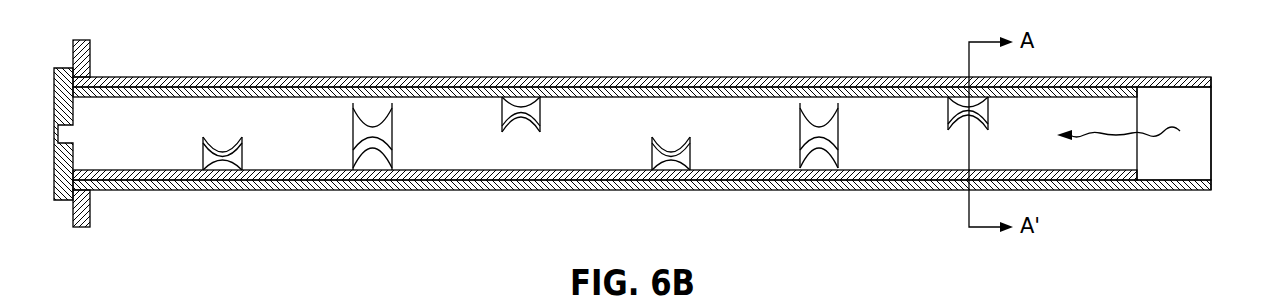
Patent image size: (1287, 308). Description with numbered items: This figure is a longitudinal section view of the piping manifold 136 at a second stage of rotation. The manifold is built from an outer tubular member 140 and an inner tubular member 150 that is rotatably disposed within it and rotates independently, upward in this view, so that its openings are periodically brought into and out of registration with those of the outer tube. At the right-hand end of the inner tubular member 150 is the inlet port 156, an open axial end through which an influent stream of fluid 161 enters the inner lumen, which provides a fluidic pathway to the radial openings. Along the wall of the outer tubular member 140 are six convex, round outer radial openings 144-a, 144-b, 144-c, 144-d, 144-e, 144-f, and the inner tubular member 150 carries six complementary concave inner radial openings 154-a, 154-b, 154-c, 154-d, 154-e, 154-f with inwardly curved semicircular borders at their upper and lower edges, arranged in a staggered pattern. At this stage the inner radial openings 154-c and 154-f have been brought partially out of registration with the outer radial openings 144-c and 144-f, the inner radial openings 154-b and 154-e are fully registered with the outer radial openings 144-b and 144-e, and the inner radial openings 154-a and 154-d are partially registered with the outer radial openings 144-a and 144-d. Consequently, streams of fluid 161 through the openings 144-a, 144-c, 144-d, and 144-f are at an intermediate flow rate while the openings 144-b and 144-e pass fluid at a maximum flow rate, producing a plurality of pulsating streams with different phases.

The piping manifold 136 is at (1084, 51).
The outer tubular member 140 is at (257, 80).
The inner tubular member 150 is at (427, 92).
The inlet port 156 is at (1148, 110).
The fluid 161 is at (1160, 137).
The inner radial opening 154-a is at (203, 158).
The inner radial opening 154-b is at (353, 108).
The inner radial opening 154-c is at (501, 113).
The inner radial opening 154-d is at (651, 158).
The inner radial opening 154-e is at (800, 113).
The inner radial opening 154-f is at (948, 110).
The outer radial opening 144-a is at (222, 150).
The outer radial opening 144-b is at (353, 142).
The outer radial opening 144-c is at (520, 117).
The outer radial opening 144-d is at (670, 150).
The outer radial opening 144-e is at (801, 143).
The outer radial opening 144-f is at (962, 120).